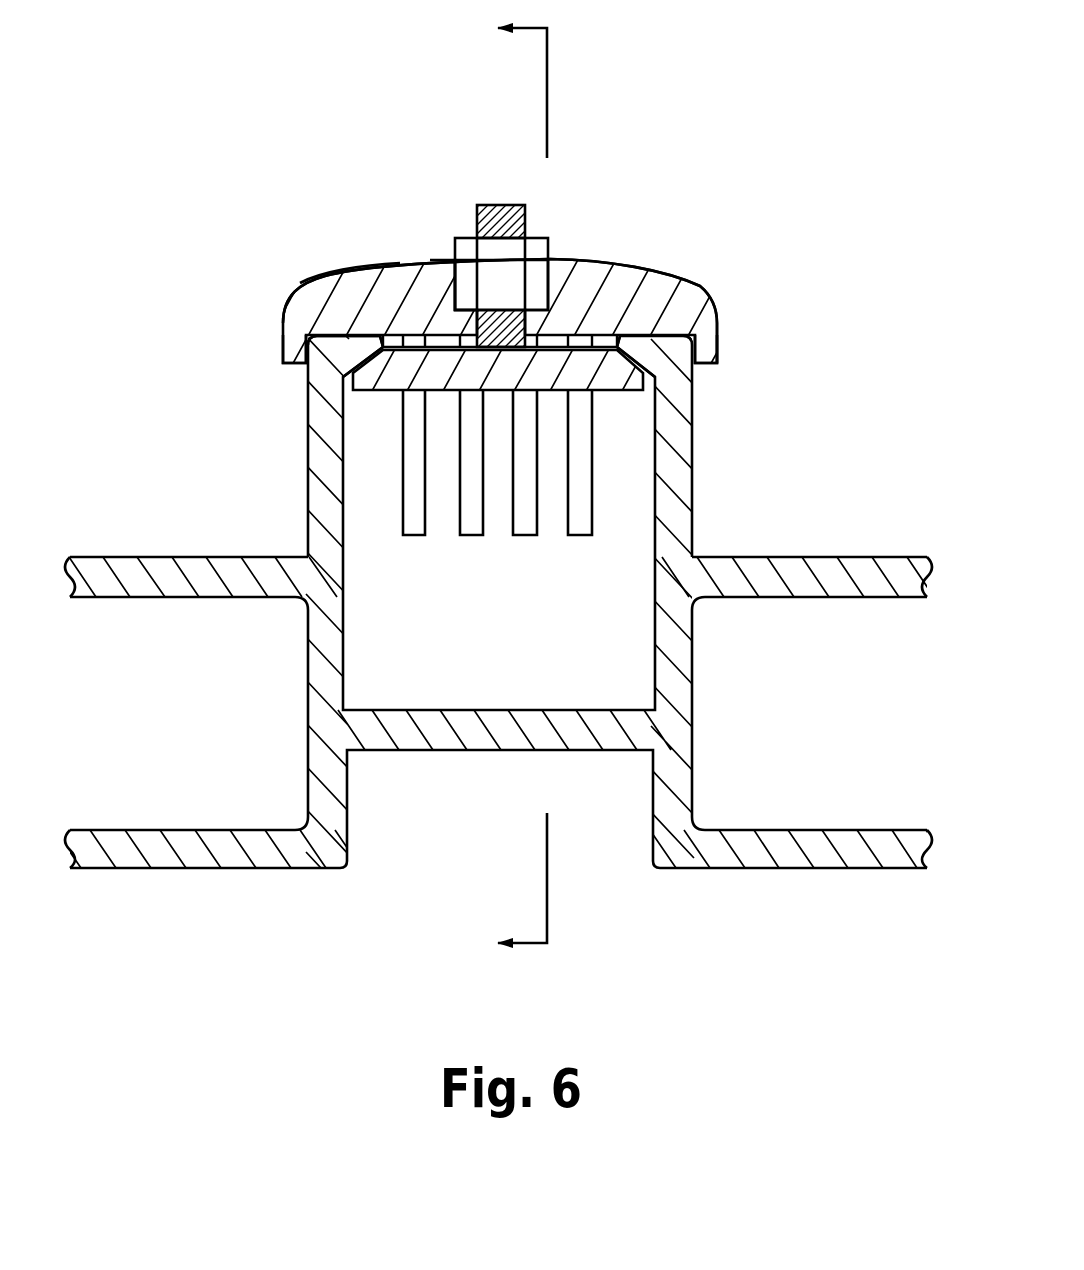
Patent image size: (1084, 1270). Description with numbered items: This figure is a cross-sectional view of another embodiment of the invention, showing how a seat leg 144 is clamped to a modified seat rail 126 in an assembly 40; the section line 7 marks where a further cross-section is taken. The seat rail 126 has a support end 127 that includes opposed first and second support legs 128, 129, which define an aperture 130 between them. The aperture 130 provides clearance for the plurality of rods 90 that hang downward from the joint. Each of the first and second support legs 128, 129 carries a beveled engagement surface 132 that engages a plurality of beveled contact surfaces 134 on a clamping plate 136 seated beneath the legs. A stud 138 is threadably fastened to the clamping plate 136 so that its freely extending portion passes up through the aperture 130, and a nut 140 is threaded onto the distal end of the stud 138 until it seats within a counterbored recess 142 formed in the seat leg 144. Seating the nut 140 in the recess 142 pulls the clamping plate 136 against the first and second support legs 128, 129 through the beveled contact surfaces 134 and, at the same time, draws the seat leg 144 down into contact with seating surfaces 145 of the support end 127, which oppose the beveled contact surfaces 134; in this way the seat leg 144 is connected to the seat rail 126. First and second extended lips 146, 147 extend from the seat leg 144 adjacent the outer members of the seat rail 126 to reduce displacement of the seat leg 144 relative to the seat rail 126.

The section line 7- 7 is at (515, 483).
The sensor assembly 40 is at (818, 160).
The rods 90 is at (580, 520).
The seat rail 126 is at (802, 584).
The support end 127 is at (680, 390).
The first support leg 128 is at (703, 293).
The second support leg 129 is at (378, 350).
The aperture 130 is at (401, 343).
The beveled engagement surface 132 is at (726, 334).
The beveled contact surfaces 134 is at (375, 355).
The clamping plate 136 is at (575, 379).
The stud 138 is at (525, 213).
The nut 140 is at (534, 261).
The counterbored recess 142 is at (455, 285).
The seat leg 144 is at (347, 297).
The seating surfaces 145 is at (637, 350).
The first extended lip 146 is at (297, 348).
The second extended lip 147 is at (722, 349).